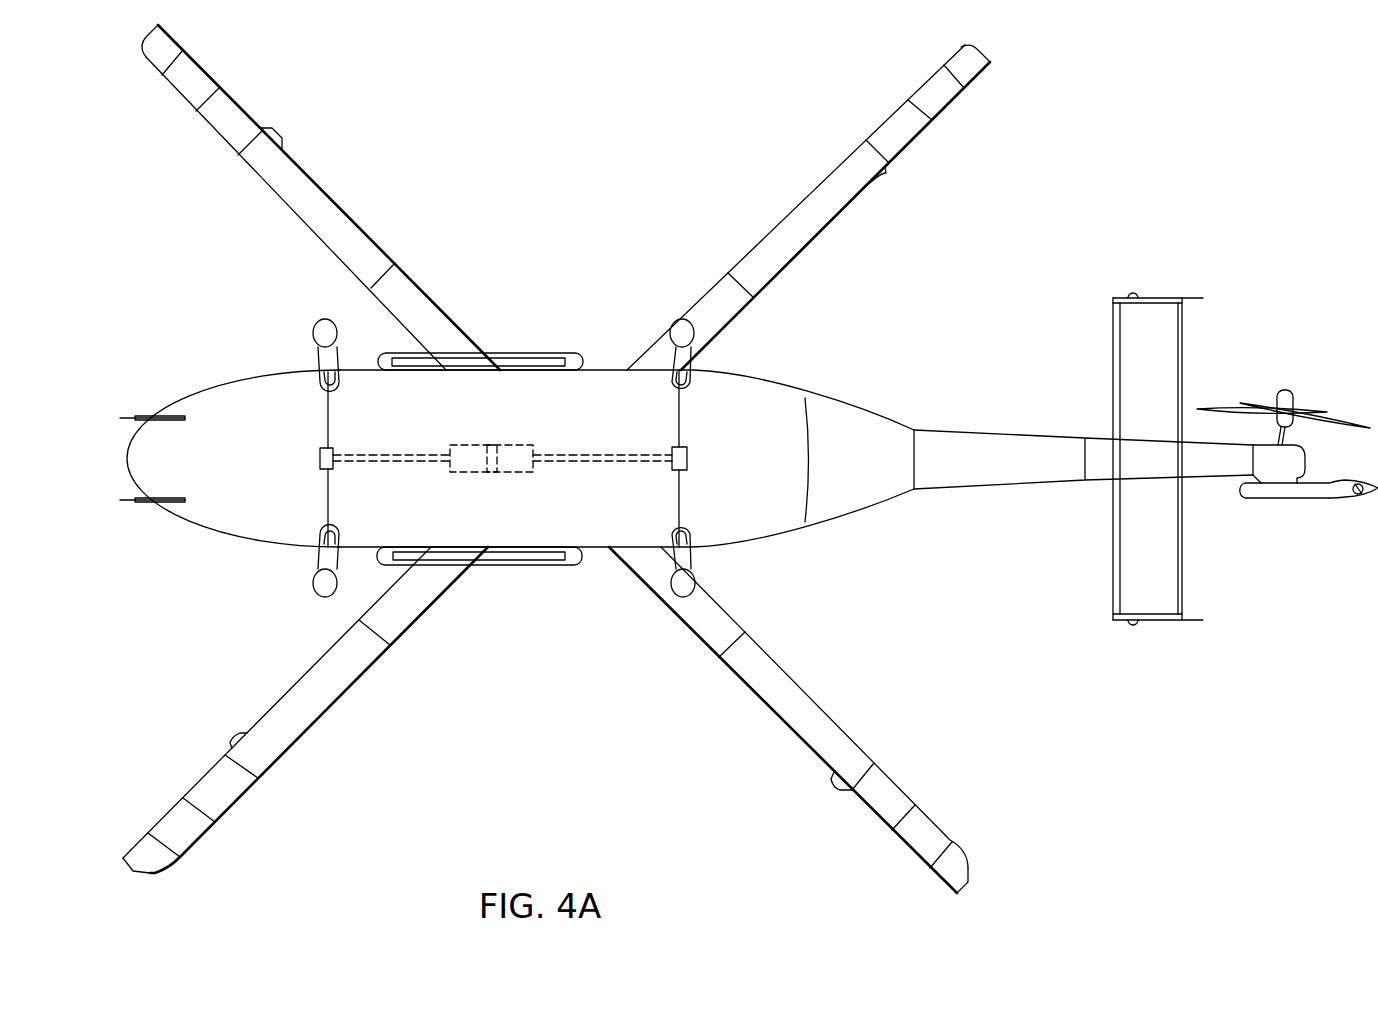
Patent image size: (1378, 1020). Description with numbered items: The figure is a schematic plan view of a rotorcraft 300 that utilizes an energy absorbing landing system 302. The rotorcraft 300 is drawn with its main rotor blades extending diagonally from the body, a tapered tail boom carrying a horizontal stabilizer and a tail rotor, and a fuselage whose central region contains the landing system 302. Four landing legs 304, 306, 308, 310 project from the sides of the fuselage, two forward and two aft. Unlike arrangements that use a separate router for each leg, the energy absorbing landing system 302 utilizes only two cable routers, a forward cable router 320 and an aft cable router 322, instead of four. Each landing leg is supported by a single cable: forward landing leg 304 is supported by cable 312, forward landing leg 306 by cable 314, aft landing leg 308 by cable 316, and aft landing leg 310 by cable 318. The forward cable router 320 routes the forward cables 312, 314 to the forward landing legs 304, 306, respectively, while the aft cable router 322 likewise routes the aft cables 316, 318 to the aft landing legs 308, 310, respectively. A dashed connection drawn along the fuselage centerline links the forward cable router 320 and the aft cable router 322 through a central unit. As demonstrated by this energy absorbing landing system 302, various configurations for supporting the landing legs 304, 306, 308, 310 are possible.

The rotorcraft 300 is at (431, 70).
The energy absorbing landing system 302 is at (504, 426).
The landing leg 304 is at (312, 333).
The landing leg 306 is at (312, 583).
The landing leg 308 is at (689, 318).
The landing leg 310 is at (689, 598).
The cable 312 is at (326, 416).
The cable 314 is at (326, 492).
The cable 316 is at (684, 416).
The cable 318 is at (684, 492).
The forward cable router 320 is at (319, 452).
The aft cable router 322 is at (690, 452).